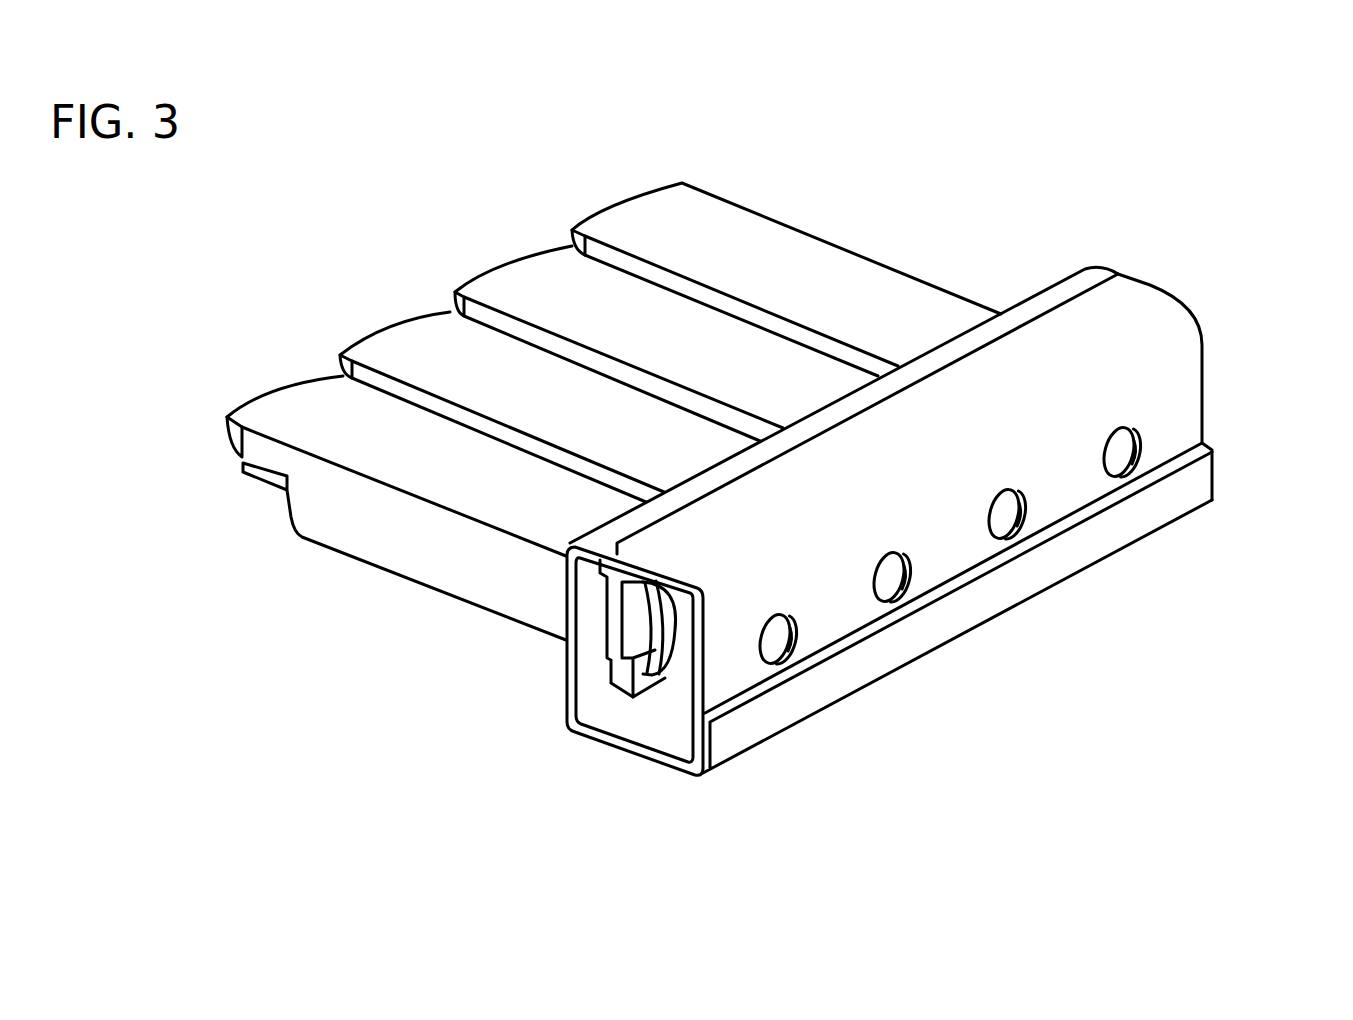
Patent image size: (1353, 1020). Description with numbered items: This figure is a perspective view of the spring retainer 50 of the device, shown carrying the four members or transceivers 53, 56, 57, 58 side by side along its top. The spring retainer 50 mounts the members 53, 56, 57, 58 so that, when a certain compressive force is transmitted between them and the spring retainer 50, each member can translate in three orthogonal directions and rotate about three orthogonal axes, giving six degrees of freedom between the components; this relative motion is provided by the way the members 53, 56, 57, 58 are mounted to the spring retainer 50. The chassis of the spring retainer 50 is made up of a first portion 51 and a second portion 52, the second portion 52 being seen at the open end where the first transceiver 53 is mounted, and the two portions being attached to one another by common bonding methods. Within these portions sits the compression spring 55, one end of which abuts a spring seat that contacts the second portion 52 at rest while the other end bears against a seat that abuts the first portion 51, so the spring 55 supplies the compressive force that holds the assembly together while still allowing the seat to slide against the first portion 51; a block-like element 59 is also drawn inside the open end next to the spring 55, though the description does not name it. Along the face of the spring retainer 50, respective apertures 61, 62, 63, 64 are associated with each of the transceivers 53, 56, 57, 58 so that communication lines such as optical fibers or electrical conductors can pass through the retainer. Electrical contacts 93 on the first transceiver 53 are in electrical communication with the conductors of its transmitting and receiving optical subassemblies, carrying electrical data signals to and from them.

The spring retainer 50 is at (1152, 293).
The first portion 51 is at (1204, 360).
The second portion 52 is at (627, 749).
The first transceiver 53 is at (252, 398).
The compression spring 55 is at (645, 618).
The transceiver 56 is at (367, 338).
The transceiver 57 is at (480, 272).
The transceiver 58 is at (748, 208).
The block inside housing 59 is at (623, 683).
The aperture 61 is at (790, 657).
The aperture 62 is at (905, 596).
The aperture 63 is at (1020, 533).
The aperture 64 is at (1135, 472).
The electrical contacts 93 is at (240, 476).